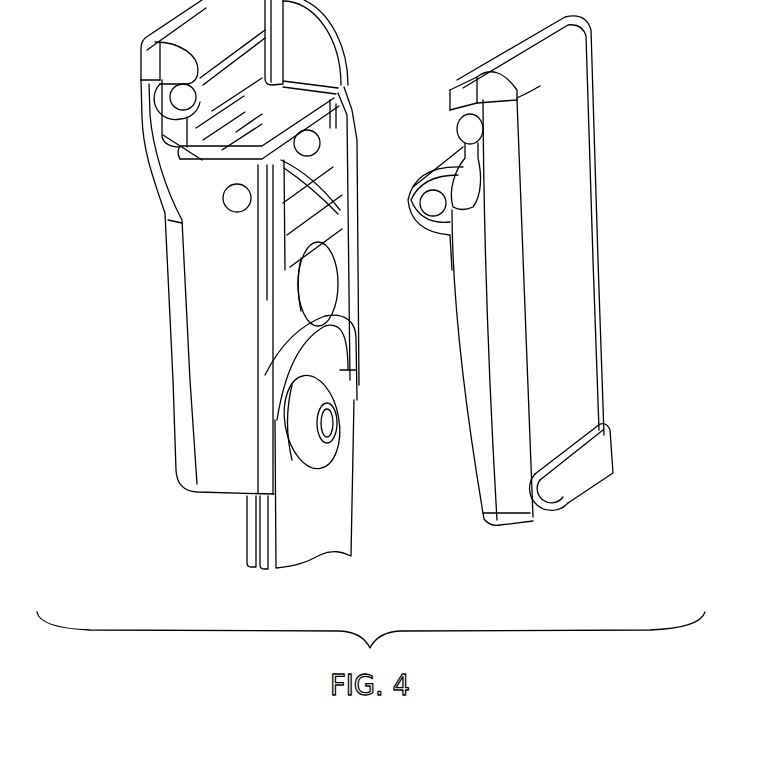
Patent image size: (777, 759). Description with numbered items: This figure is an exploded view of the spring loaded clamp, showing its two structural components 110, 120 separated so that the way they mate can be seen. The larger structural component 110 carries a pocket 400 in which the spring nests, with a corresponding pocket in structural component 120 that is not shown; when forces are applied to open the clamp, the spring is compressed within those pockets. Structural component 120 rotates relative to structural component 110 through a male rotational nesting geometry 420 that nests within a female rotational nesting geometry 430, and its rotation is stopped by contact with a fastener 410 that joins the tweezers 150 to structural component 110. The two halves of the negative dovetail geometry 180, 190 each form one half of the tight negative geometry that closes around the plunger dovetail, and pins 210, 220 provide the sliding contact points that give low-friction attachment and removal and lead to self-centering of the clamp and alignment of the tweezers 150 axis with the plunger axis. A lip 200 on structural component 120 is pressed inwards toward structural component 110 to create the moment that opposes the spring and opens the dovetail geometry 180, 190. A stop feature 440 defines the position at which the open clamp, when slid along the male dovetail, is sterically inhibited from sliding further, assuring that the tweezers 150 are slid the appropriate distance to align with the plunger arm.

The structural component 110 is at (217, 288).
The structural component 120 is at (582, 278).
The tweezers 150 is at (342, 525).
The negative dovetail geometry 180 is at (168, 62).
The negative dovetail geometry 190 is at (467, 93).
The lip 200 is at (583, 467).
The pin 210 is at (180, 98).
The pin 220 is at (467, 132).
The pocket 400 is at (300, 293).
The fastener 410 is at (335, 422).
The male rotational nesting geometry 420 is at (433, 204).
The female rotational nesting geometry 430 is at (310, 155).
The stop feature 440 is at (330, 50).